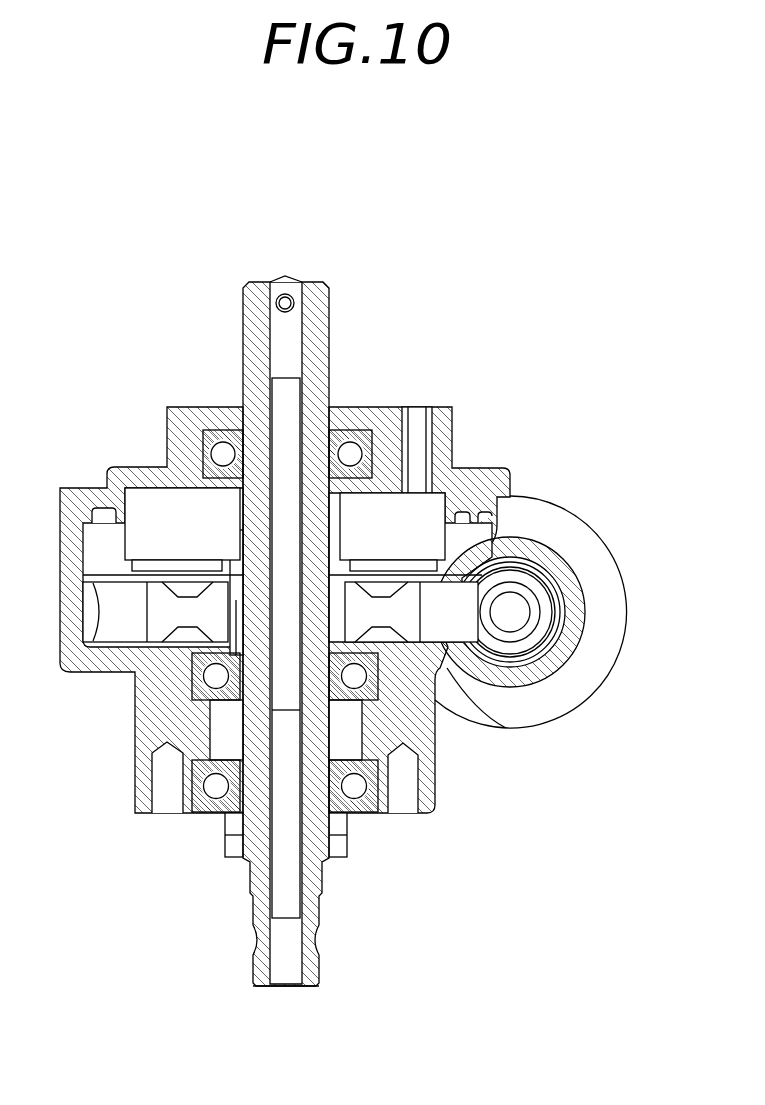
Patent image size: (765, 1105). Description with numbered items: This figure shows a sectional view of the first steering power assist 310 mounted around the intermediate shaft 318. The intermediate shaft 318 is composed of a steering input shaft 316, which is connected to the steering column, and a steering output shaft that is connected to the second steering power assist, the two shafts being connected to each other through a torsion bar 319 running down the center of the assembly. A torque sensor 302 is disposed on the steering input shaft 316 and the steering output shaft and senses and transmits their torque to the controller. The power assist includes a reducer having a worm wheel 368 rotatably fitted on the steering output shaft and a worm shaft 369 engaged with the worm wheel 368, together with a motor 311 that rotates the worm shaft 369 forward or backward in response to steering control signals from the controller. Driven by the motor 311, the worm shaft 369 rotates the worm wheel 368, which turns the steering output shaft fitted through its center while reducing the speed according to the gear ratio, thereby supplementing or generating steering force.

The first steering power assist 310 is at (139, 192).
The torque sensor 302 is at (153, 512).
The motor 311 is at (568, 523).
The steering input shaft 316 is at (248, 378).
The intermediate shaft 318 is at (271, 606).
The torsion bar 319 is at (290, 410).
The worm wheel 368 is at (447, 622).
The worm shaft 369 is at (518, 635).